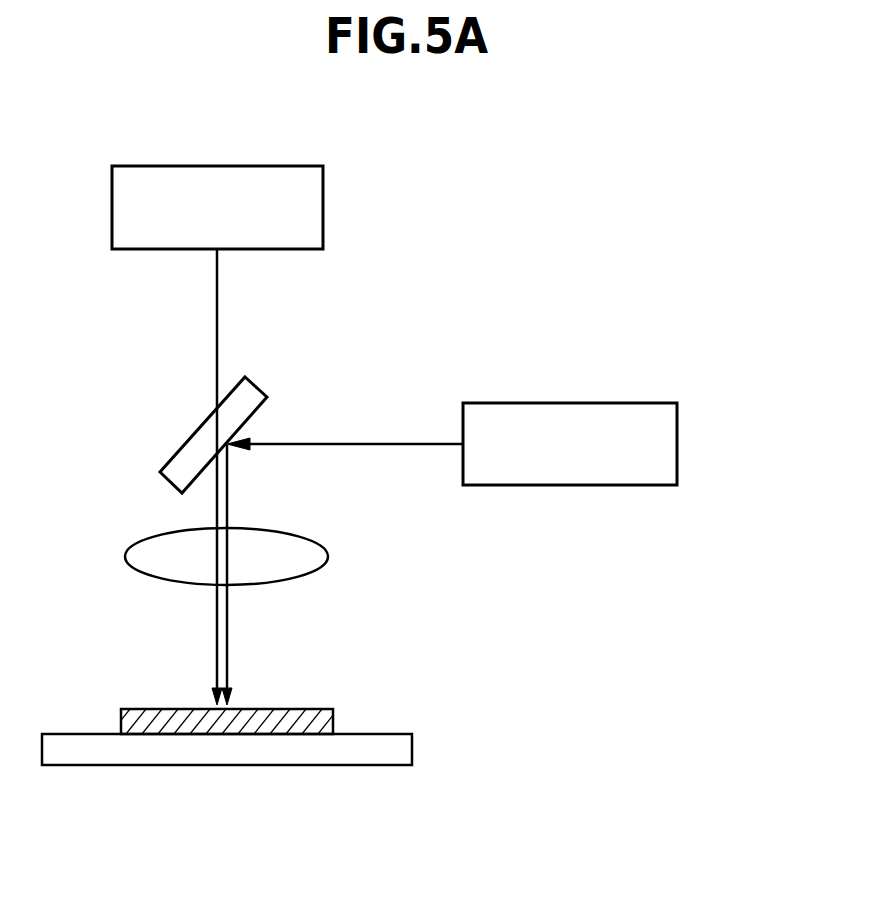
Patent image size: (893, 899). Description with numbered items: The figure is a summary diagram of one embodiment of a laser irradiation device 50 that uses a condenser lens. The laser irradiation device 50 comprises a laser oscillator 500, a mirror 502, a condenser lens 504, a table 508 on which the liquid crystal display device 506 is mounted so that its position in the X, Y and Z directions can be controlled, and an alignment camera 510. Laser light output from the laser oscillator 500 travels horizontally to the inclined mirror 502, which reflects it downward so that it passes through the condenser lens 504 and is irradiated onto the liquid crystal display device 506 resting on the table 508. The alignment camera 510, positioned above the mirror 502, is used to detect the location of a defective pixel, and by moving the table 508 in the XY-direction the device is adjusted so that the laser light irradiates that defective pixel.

The laser irradiation device 50 is at (567, 283).
The laser oscillator 500 is at (648, 445).
The mirror 502 is at (243, 405).
The condenser lens 504 is at (310, 557).
The liquid crystal display device 506 is at (313, 722).
The table 508 is at (395, 750).
The alignment camera 510 is at (308, 215).